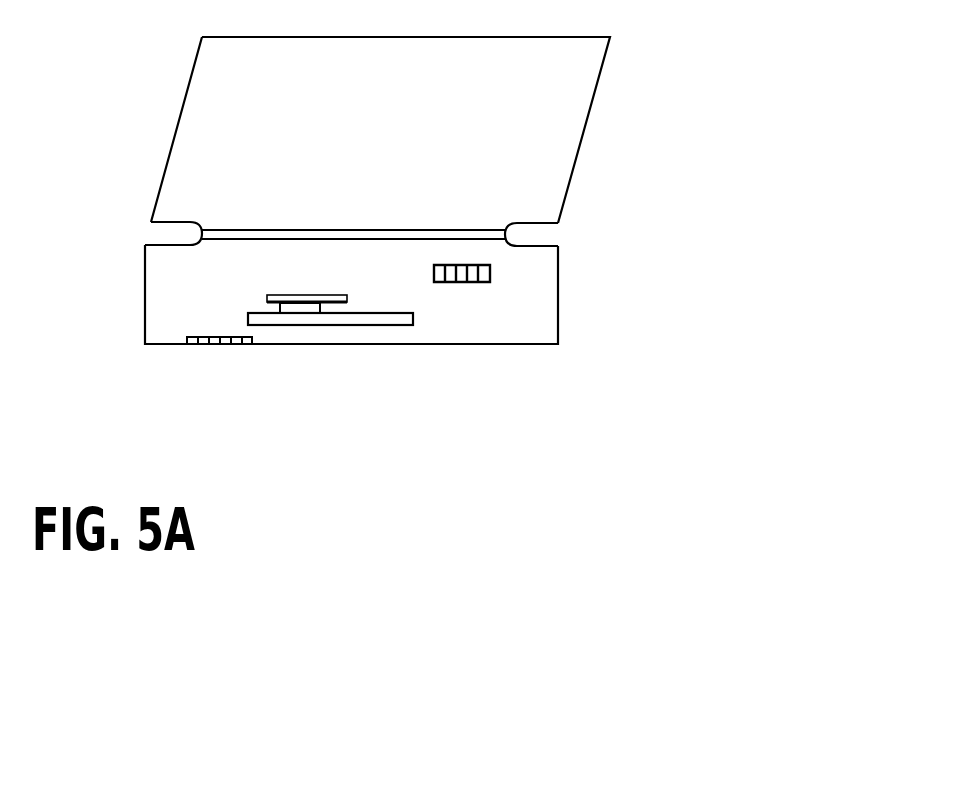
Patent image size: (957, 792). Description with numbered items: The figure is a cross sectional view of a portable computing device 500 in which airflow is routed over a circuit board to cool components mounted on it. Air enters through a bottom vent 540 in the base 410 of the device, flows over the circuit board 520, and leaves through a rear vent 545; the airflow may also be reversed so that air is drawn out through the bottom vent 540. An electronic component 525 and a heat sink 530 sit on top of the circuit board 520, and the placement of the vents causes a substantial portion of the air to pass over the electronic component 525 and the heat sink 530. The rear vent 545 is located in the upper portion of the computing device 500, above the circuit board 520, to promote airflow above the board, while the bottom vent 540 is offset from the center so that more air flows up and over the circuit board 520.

The computing device 500 is at (597, 250).
The base housing 410 is at (457, 345).
The circuit board 520 is at (415, 320).
The electronic component 525 is at (277, 307).
The heat sink 530 is at (332, 293).
The bottom vent 540 is at (230, 345).
The rear vent 545 is at (475, 283).